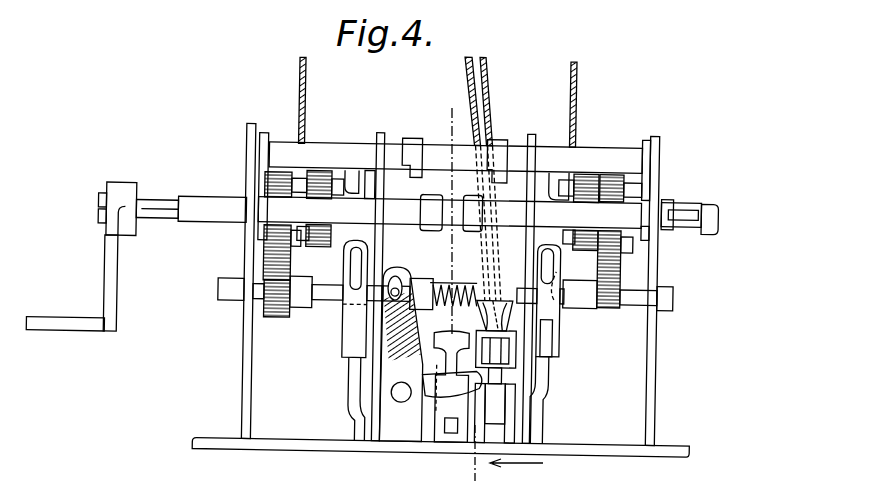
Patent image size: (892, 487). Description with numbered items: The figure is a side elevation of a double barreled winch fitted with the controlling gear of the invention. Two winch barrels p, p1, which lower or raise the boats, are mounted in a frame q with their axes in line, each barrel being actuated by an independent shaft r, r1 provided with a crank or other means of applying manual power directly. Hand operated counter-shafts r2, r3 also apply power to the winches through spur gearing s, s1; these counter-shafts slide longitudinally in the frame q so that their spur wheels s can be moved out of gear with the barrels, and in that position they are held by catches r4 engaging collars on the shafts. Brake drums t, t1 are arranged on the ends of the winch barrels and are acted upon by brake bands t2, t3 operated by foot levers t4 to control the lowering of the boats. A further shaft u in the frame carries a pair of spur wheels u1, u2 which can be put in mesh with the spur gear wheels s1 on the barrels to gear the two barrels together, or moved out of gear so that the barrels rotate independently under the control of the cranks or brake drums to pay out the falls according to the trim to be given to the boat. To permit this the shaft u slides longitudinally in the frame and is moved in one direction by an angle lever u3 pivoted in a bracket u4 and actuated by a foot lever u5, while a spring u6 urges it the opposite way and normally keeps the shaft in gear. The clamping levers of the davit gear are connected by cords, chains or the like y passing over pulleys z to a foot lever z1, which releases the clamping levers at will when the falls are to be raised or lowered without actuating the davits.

The winch frame q is at (230, 446).
The independent shaft r1 is at (163, 200).
The hand operated counter-shaft r2 is at (201, 218).
The hand operated counter-shaft r3 is at (677, 206).
The independent shaft r is at (710, 204).
The catch r4 is at (415, 184).
The spur gear wheel s1 is at (280, 186).
The spur wheel s is at (300, 243).
The winch barrel p1 is at (268, 256).
The winch barrel p is at (630, 247).
The shaft u is at (230, 305).
The spur wheel u1 is at (282, 321).
The spur wheel u2 is at (607, 307).
The angle lever u3 is at (400, 360).
The bracket u4 is at (413, 410).
The foot lever u5 is at (453, 318).
The spring u6 is at (457, 281).
The brake drum t is at (560, 198).
The brake drum t1 is at (357, 174).
The brake band t2 is at (551, 300).
The brake band t3 is at (363, 188).
The foot lever t4 is at (350, 304).
The cords, chains or the like y is at (462, 96).
The pulley z is at (517, 367).
The foot lever z1 is at (500, 293).